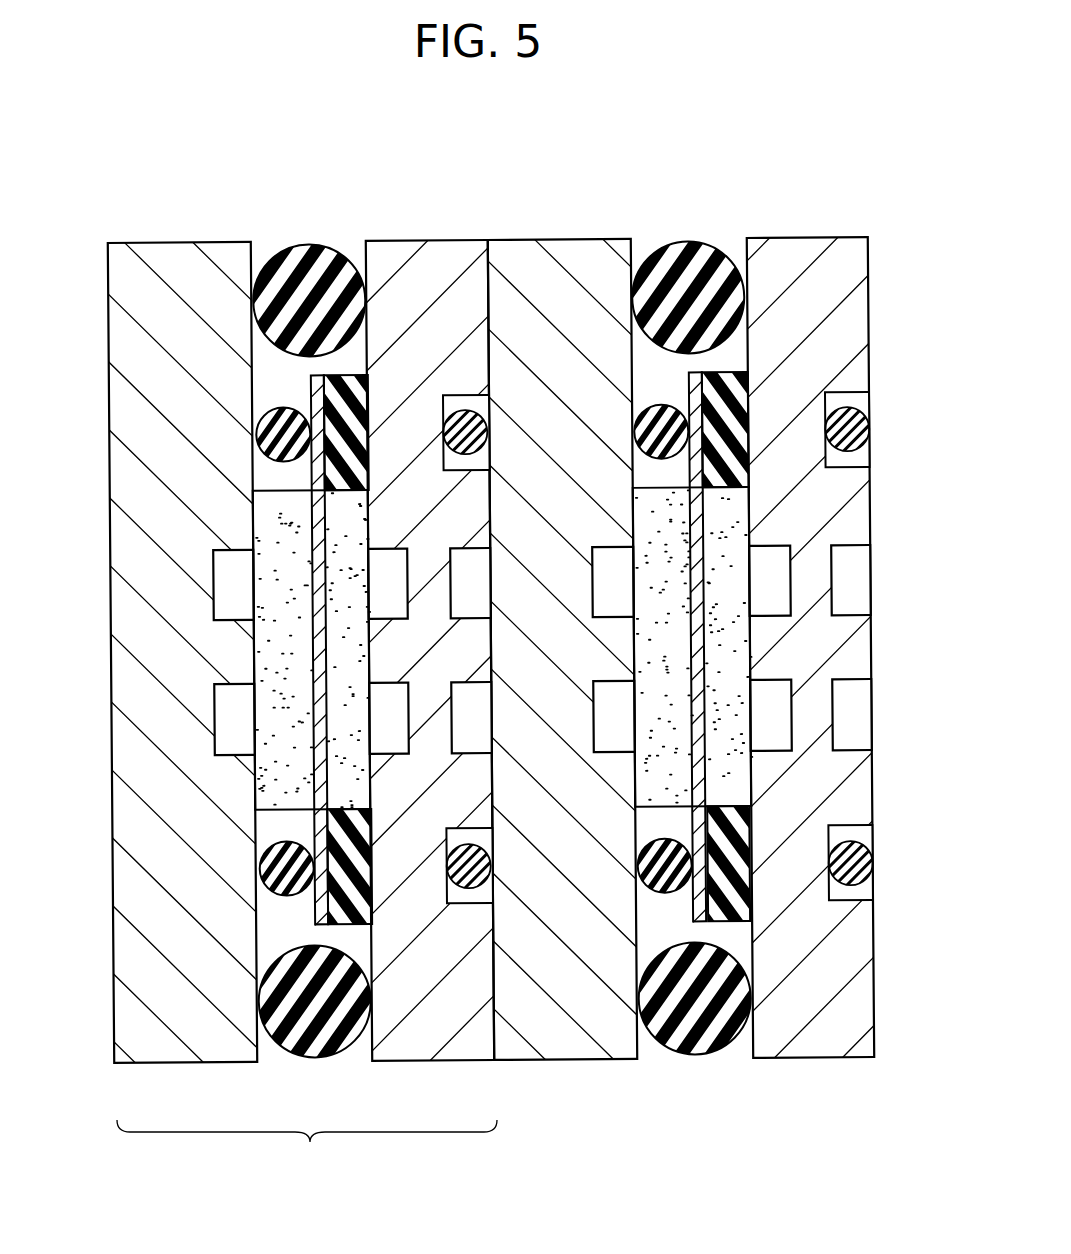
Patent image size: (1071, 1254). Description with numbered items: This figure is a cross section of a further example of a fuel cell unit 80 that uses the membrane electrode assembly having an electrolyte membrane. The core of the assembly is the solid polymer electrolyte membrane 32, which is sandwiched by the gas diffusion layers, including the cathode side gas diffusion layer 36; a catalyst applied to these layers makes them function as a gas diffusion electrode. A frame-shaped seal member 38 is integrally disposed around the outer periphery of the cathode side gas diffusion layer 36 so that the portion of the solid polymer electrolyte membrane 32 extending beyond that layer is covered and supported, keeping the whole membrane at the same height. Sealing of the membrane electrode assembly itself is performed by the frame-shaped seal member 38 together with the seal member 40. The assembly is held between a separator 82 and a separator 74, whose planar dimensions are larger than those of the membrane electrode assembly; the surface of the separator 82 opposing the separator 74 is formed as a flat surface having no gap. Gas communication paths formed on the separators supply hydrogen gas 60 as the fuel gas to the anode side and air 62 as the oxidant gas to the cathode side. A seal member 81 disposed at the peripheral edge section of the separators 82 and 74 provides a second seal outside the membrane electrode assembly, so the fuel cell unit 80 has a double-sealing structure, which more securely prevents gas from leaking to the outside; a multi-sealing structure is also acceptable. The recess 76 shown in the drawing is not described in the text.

The solid polymer electrolyte membrane 32 is at (697, 393).
The cathode side gas diffusion layer 36 is at (727, 520).
The frame-shaped seal member 38 is at (743, 823).
The seal member 40 is at (648, 420).
The hydrogen gas 60 is at (225, 573).
The air 62 is at (385, 590).
The separator 74 is at (830, 252).
The flow passage recess 76 is at (467, 717).
The fuel cell unit 80 is at (307, 1149).
The seal member 81 is at (313, 268).
The separator 82 is at (548, 262).